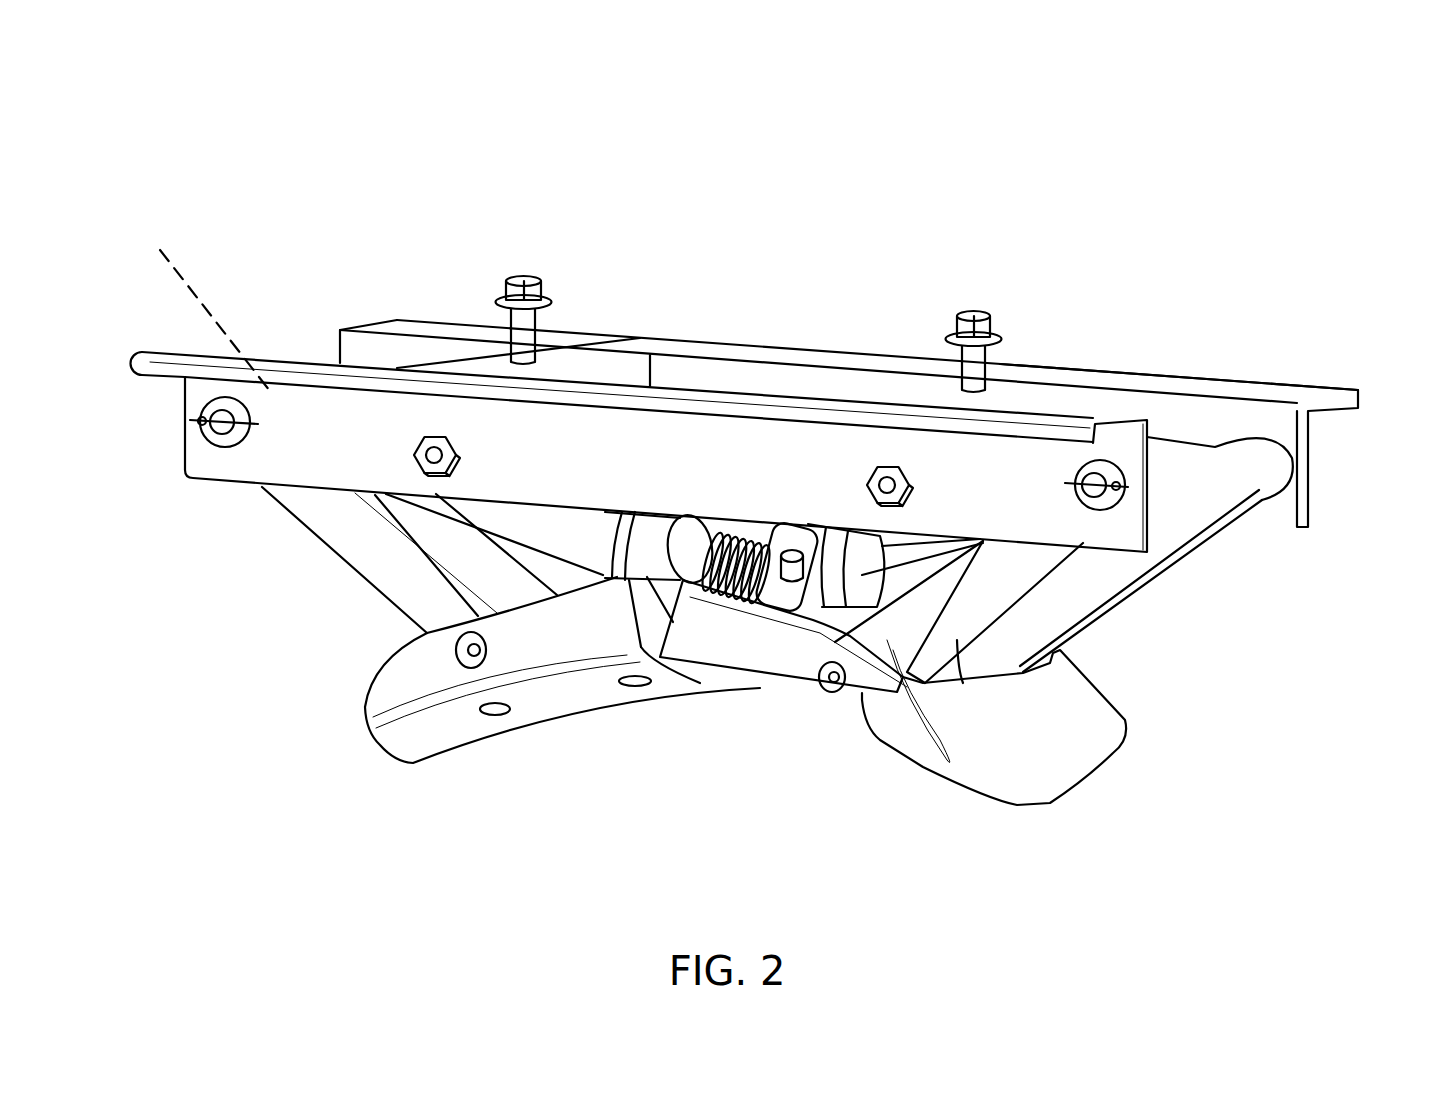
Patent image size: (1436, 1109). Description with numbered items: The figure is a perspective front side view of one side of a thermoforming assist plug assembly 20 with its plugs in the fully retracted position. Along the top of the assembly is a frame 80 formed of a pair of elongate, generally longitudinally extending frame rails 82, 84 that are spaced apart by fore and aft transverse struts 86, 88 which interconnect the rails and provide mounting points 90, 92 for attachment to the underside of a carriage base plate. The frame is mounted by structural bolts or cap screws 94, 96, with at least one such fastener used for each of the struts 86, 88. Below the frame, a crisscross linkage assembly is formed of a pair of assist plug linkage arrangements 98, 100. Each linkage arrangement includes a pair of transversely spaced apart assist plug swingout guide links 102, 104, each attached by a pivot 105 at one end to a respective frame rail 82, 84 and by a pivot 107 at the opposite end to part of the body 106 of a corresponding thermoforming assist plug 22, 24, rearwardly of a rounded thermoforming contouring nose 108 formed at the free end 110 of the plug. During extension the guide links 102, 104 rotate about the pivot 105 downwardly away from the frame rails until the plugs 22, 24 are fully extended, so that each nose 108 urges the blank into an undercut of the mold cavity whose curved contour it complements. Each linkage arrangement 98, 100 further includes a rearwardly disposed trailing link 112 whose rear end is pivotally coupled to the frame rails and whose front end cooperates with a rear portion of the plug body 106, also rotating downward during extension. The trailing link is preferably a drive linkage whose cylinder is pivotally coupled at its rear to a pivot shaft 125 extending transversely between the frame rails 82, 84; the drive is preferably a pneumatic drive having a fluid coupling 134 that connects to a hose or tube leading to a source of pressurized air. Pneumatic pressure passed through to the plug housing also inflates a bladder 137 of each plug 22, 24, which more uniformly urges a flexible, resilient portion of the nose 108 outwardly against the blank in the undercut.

The thermoforming assist plug assembly 20 is at (271, 230).
The thermoforming assist plug 22 is at (1140, 717).
The thermoforming assist plug 24 is at (313, 737).
The frame 80 is at (1205, 355).
The frame rail 82 is at (797, 447).
The frame rail 84 is at (808, 392).
The transverse strut 86 is at (1057, 380).
The transverse strut 88 is at (607, 362).
The mounting point 90 is at (989, 266).
The mounting point 92 is at (485, 262).
The structural bolt or cap screw 94 is at (966, 318).
The structural bolt or cap screw 96 is at (523, 285).
The assist plug linkage arrangement 98 is at (1207, 570).
The assist plug linkage arrangement 100 is at (285, 527).
The assist plug swingout guide link 102 is at (352, 538).
The assist plug swingout guide link 104 is at (545, 570).
The pivot 105 is at (200, 421).
The body 106 is at (572, 632).
The pivot 107 is at (477, 655).
The rounded thermoforming contouring nose 108 is at (370, 738).
The free end 110 is at (390, 748).
The trailing link 112 is at (499, 540).
The pivot shaft 125 is at (1390, 307).
The fluid coupling 134 is at (788, 552).
The bladder 137 is at (360, 703).